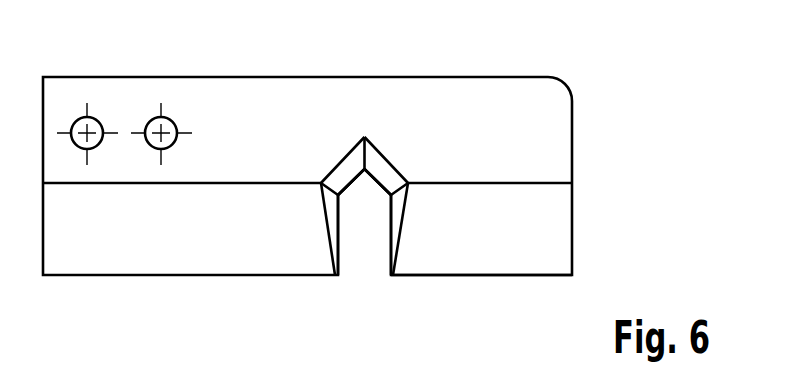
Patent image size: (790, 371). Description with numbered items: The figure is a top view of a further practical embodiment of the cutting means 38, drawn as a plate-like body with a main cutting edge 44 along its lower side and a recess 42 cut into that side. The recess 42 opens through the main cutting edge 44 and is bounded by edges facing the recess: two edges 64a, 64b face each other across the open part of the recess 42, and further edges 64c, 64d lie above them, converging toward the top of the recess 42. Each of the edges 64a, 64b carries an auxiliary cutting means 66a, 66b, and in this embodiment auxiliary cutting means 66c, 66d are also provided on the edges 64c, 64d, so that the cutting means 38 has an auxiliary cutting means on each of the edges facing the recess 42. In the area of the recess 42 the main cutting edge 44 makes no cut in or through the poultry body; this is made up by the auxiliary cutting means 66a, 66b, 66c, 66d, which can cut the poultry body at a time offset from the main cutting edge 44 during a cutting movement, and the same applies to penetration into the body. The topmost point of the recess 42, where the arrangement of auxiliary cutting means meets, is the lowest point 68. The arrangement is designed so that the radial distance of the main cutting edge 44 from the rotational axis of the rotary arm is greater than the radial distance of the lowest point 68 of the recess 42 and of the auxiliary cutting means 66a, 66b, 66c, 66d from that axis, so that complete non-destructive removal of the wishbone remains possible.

The cutting means 38 is at (548, 95).
The recess 42 is at (364, 288).
The main cutting edge 44 is at (519, 288).
The edge 64a is at (325, 232).
The edge 64b is at (403, 232).
The edge 64c is at (395, 165).
The edge 64d is at (334, 165).
The auxiliary cutting means 66a is at (330, 199).
The auxiliary cutting means 66b is at (398, 199).
The auxiliary cutting means 66c is at (373, 160).
The auxiliary cutting means 66d is at (356, 160).
The lowest point 68 is at (365, 186).